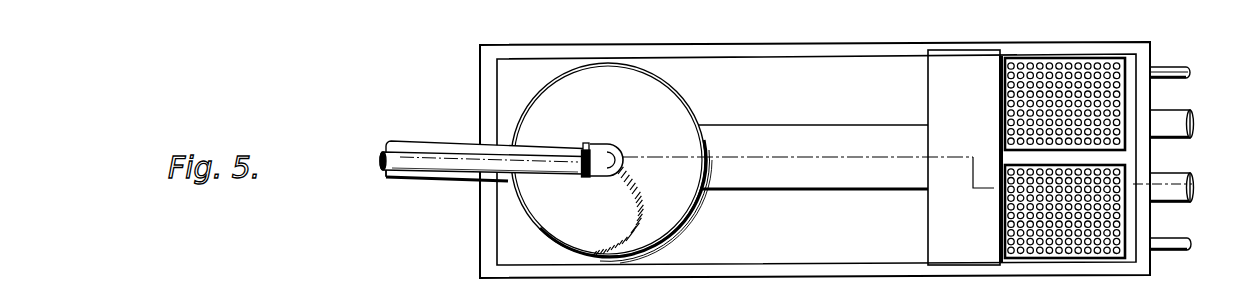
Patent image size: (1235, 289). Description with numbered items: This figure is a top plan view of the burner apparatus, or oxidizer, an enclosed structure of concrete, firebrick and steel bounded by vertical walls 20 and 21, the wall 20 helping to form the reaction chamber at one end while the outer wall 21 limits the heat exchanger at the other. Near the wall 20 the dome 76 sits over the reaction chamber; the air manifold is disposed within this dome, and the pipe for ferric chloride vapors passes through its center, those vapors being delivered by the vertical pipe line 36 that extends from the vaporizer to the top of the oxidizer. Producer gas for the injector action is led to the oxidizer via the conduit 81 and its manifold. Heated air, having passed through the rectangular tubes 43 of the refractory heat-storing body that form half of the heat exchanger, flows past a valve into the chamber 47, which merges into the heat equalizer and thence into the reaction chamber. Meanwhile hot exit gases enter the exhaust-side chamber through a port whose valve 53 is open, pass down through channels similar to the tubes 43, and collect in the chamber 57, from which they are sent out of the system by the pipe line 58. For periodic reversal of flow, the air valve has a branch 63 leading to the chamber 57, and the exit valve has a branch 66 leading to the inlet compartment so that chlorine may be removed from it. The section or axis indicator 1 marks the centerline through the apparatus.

The axis indicator 1 is at (366, 161).
The vertical wall 20 is at (481, 92).
The vertical wall 21 is at (1152, 230).
The pipe line 36 is at (381, 170).
The tubes 43 is at (1058, 58).
The chamber 47 is at (944, 109).
The valve 53 is at (1083, 258).
The chamber 57 is at (1183, 50).
The pipe line 58 is at (812, 123).
The branch 63 is at (1173, 249).
The branch 66 is at (1173, 107).
The dome 76 is at (542, 94).
The conduit 81 is at (438, 133).